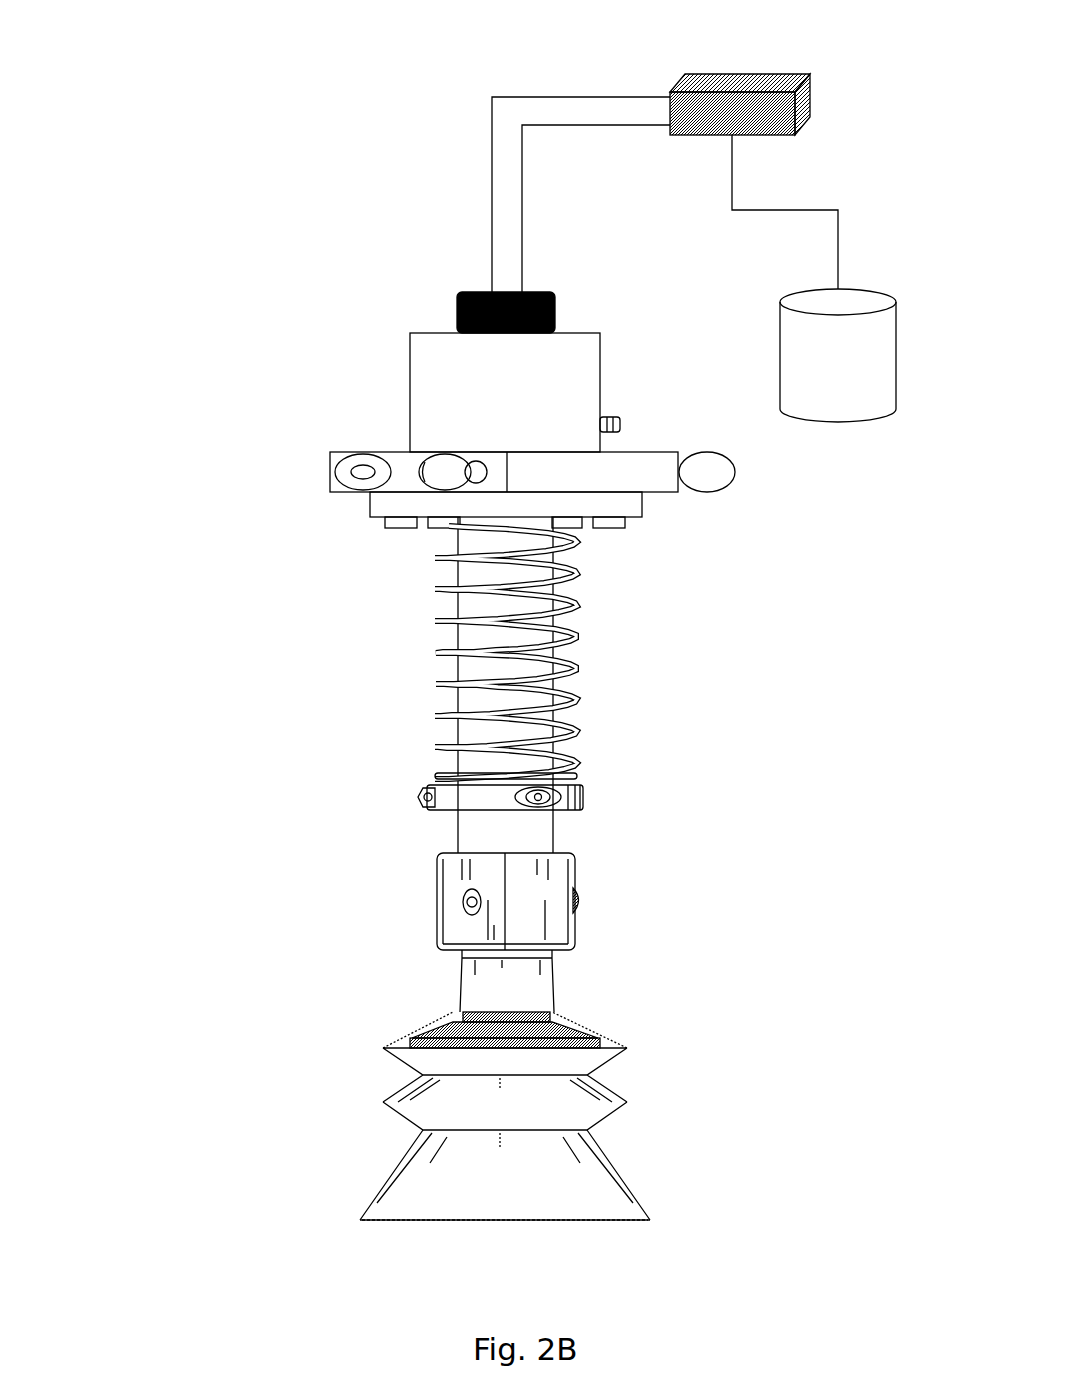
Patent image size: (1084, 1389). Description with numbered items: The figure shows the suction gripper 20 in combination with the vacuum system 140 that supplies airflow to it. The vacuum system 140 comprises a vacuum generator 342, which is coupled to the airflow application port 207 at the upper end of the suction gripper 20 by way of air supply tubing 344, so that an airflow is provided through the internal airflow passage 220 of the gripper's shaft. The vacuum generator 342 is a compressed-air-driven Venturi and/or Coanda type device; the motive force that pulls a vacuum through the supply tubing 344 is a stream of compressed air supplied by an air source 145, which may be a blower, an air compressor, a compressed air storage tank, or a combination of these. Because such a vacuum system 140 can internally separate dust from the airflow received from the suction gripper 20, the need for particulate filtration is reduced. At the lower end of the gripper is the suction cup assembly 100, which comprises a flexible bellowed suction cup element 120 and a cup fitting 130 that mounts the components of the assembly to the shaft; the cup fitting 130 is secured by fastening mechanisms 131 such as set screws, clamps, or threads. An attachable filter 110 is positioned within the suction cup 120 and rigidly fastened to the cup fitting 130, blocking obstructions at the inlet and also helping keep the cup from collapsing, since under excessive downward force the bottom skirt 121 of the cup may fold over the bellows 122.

The vacuum system 140 is at (645, 48).
The vacuum generator 342 is at (757, 73).
The air supply tubing 344 is at (488, 128).
The air source 145 is at (897, 348).
The airflow application port 207 is at (550, 298).
The suction gripper 20 is at (197, 278).
The suction cup assembly 100 is at (282, 890).
The cup fitting 130 is at (437, 863).
The fastening mechanisms 131 is at (462, 903).
The attachable filter 110 is at (415, 1037).
The bellowed suction cup element 120 is at (377, 1198).
The bottom skirt 121 is at (650, 1220).
The bellows 122 is at (660, 1045).
The internal airflow passage 220 is at (493, 1252).